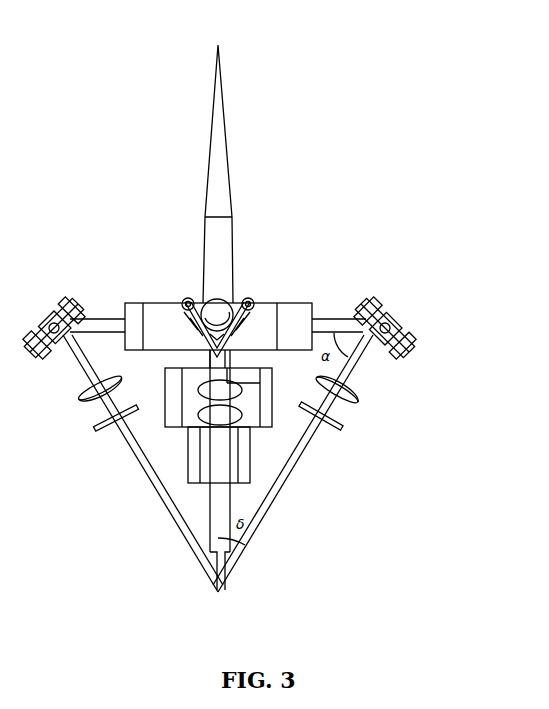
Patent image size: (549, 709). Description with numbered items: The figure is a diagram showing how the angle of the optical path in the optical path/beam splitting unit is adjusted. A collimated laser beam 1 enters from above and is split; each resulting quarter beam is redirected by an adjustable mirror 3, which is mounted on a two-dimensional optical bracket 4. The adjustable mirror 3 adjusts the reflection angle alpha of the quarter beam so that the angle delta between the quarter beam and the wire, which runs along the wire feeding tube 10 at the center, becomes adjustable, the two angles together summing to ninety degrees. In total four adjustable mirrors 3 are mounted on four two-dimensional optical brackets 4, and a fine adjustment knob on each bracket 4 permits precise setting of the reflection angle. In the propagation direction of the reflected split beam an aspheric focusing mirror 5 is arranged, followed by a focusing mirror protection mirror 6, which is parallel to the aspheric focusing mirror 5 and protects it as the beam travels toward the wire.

The collimated laser beam 1 is at (213, 200).
The adjustable mirror 3 is at (221, 316).
The two-dimensional optical bracket 4 is at (398, 308).
The aspheric focusing mirror 5 is at (358, 400).
The focusing mirror protection mirror 6 is at (299, 405).
The wire feeding tube 10 is at (225, 528).